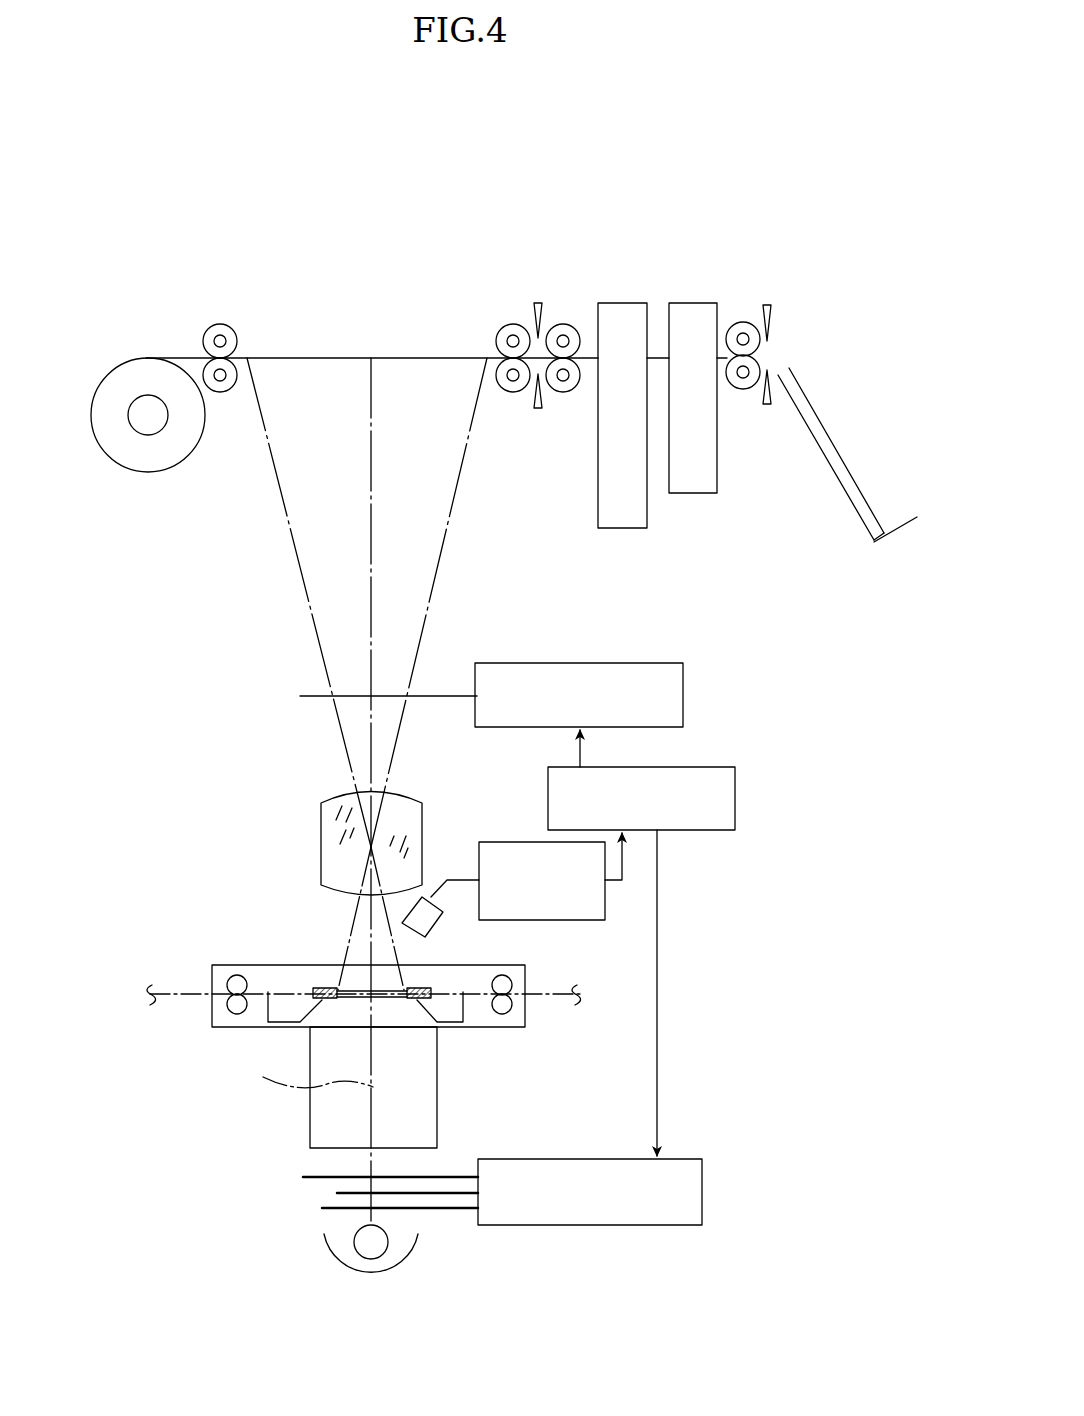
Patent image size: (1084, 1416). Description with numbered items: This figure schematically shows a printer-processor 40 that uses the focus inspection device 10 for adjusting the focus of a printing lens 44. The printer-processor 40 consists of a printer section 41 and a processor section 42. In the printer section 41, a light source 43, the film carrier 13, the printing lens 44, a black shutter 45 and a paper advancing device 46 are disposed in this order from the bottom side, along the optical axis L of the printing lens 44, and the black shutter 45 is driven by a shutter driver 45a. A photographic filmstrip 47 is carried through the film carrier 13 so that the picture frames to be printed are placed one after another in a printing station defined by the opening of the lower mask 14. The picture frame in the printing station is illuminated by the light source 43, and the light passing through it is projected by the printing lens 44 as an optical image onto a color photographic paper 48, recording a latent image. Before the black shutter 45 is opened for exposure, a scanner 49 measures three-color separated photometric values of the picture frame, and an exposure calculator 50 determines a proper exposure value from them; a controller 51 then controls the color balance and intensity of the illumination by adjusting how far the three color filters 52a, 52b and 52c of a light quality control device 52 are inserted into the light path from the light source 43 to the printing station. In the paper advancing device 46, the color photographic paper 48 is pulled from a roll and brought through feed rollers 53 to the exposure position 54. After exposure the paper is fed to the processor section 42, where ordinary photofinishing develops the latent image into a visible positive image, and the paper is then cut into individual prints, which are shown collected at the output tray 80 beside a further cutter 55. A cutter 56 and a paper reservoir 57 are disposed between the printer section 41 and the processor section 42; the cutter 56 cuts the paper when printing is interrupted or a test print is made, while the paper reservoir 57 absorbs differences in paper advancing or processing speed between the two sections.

The printer-processor 40 is at (414, 246).
The printer section 41 is at (294, 298).
The processor section 42 is at (694, 303).
The light source 43 is at (220, 1212).
The printing lens 44 is at (322, 802).
The black shutter 45 is at (305, 695).
The shutter driver 45a is at (645, 663).
The paper advancing device 46 is at (178, 326).
The photographic filmstrip 47 is at (200, 996).
The color photographic paper 48 is at (346, 358).
The scanner 49 is at (427, 896).
The exposure calculator 50 is at (552, 921).
The controller 51 is at (698, 767).
The light quality control device 52 is at (538, 1158).
The color filter 52a is at (318, 1175).
The color filter 52b is at (348, 1194).
The color filter 52c is at (345, 1210).
The feed rollers 53 is at (216, 328).
The exposure position 54 is at (339, 394).
The cutter 55 is at (767, 304).
The cutter 56 is at (538, 302).
The paper reservoir 57 is at (622, 303).
The print tray 80 is at (810, 402).
The focus inspection device 10 is at (325, 988).
The film carrier 13 is at (238, 962).
The lower mask 14 is at (452, 1005).
The optical axis L is at (302, 1080).